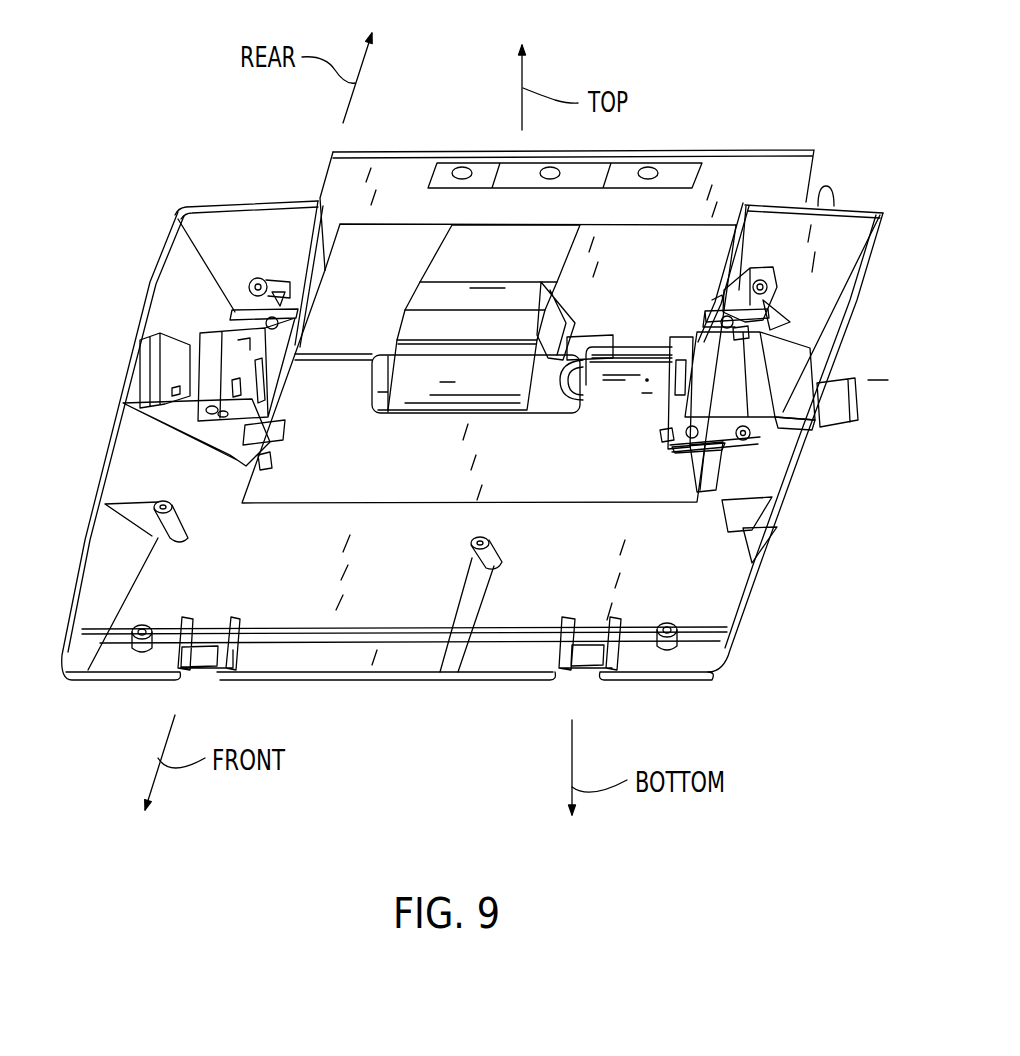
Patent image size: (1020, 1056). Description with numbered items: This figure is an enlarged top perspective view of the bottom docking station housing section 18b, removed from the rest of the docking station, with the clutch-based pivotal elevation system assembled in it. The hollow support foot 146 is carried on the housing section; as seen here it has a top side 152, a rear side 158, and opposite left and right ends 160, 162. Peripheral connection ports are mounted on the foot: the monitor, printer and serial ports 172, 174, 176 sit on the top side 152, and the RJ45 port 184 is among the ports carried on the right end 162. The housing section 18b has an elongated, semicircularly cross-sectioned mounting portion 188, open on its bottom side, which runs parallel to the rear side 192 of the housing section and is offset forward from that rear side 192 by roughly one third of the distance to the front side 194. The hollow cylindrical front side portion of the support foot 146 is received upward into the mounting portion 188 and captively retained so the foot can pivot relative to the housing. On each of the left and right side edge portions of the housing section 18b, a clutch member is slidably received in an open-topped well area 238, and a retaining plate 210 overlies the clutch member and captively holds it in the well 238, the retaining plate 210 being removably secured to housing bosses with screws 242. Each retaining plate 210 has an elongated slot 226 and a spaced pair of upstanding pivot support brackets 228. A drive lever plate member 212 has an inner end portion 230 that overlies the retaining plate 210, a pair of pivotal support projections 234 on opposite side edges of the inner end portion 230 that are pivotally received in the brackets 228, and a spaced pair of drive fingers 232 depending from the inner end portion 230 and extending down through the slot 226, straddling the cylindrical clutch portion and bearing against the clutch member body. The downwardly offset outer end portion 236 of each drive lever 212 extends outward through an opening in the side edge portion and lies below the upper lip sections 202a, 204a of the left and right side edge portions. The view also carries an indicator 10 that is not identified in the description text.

The printing device 10 is at (630, 333).
The bottom docking station housing section 18b is at (772, 558).
The support foot 146 is at (774, 140).
The top side 152 is at (717, 173).
The rear side 158 is at (362, 151).
The left end 160 is at (323, 173).
The right end 162 is at (825, 177).
The monitor port 172 is at (650, 167).
The printer port 174 is at (553, 168).
The serial port 176 is at (462, 168).
The RJ45 port 184 is at (833, 198).
The mounting portion 188 is at (348, 354).
The rear side 192 is at (227, 202).
The front side 194 is at (303, 682).
The upper lip section 202a is at (178, 282).
The upper lip section 204a is at (843, 348).
The retaining plate 210 is at (300, 312).
The drive lever plate member 212 is at (233, 352).
The elongated slot 226 is at (248, 398).
The pivot support brackets 228 is at (238, 310).
The inner end portion 230 is at (262, 437).
The drive fingers 232 is at (262, 392).
The pivotal support projections 234 is at (240, 462).
The outer end portion 236 is at (168, 378).
The well areas 238 is at (222, 452).
The screws 242 is at (288, 285).